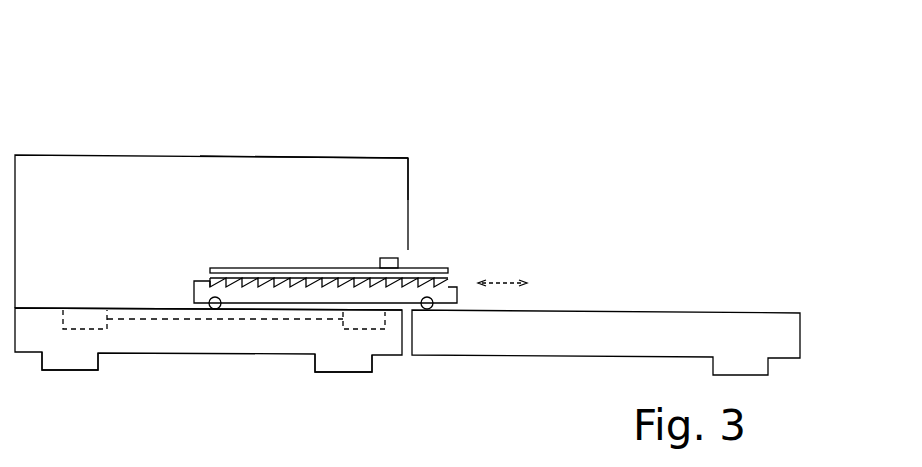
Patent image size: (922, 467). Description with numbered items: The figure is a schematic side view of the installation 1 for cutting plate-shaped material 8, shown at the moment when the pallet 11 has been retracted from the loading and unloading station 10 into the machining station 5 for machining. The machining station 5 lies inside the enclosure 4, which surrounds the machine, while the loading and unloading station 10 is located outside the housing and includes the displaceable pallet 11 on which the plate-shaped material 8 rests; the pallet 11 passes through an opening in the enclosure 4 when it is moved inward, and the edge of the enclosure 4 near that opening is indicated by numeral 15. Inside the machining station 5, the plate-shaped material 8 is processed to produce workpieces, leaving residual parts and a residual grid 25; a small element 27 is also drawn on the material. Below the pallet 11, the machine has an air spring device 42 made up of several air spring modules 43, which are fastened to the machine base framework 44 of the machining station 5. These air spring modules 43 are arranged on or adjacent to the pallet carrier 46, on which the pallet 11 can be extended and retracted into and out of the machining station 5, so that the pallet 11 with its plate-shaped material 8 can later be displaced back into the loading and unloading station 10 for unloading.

The installation 1 is at (201, 118).
The machining station 5 is at (118, 198).
The enclosure 4 is at (355, 175).
The housing edge 15 is at (411, 167).
The loading and unloading station 10 is at (645, 283).
The air spring device 42 is at (126, 342).
The machine base framework 44 is at (229, 351).
The air spring modules 43 is at (82, 334).
The pallet carrier 46 is at (125, 304).
The residual grid 25 is at (225, 272).
The plate-shaped material 8 is at (300, 272).
The stop element 27 is at (385, 258).
The pallet 11 is at (458, 285).